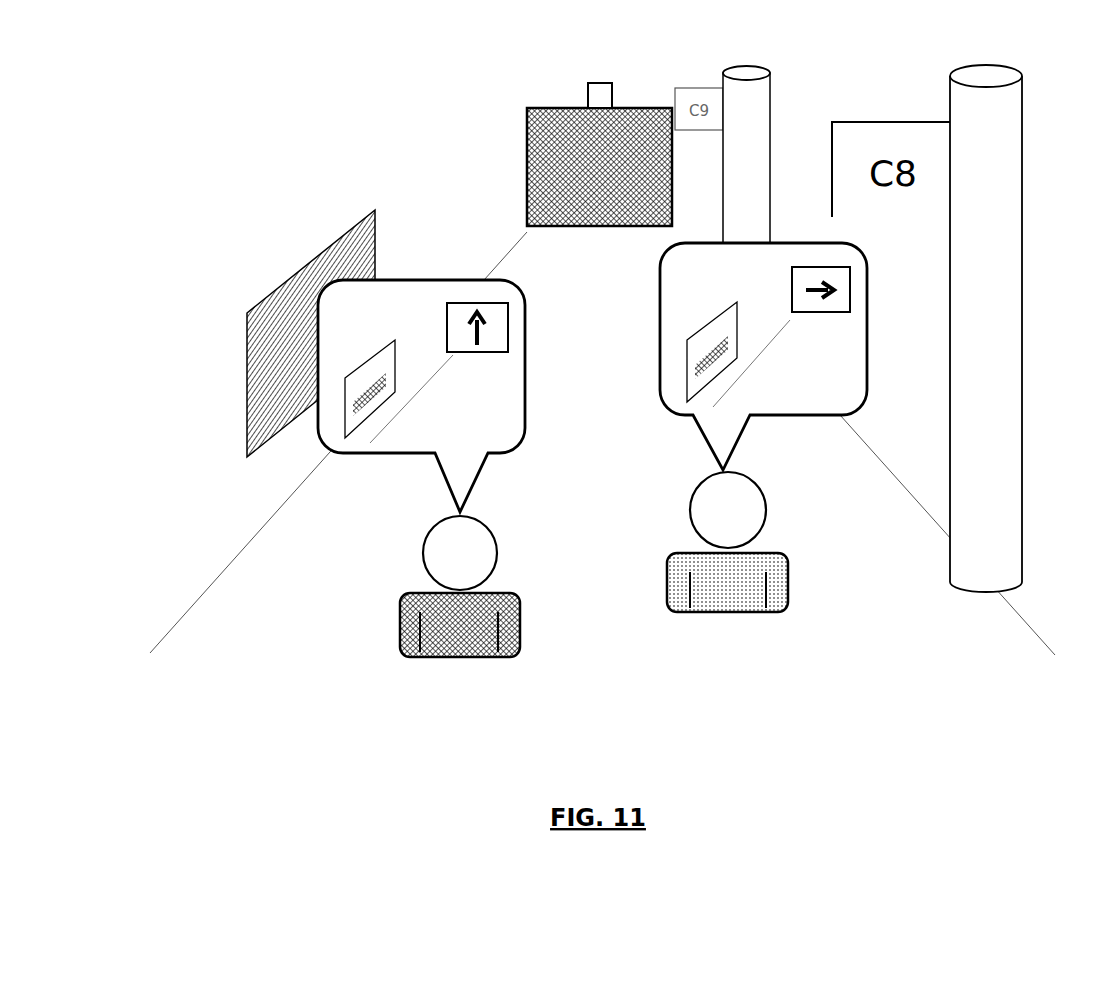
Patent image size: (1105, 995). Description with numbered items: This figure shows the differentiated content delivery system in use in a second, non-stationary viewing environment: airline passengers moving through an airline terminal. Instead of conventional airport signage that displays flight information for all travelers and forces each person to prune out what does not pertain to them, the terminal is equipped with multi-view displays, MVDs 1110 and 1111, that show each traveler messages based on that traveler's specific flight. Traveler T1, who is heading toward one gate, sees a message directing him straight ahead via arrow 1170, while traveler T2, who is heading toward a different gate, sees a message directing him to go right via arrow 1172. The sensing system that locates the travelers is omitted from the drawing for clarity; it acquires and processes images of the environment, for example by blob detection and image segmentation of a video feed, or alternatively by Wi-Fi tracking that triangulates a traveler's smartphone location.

The MVD 1110 is at (333, 240).
The MVD 1111 is at (552, 107).
The arrow 1170 is at (526, 300).
The arrow 1172 is at (864, 258).
The traveler T1 is at (405, 592).
The traveler T2 is at (668, 551).